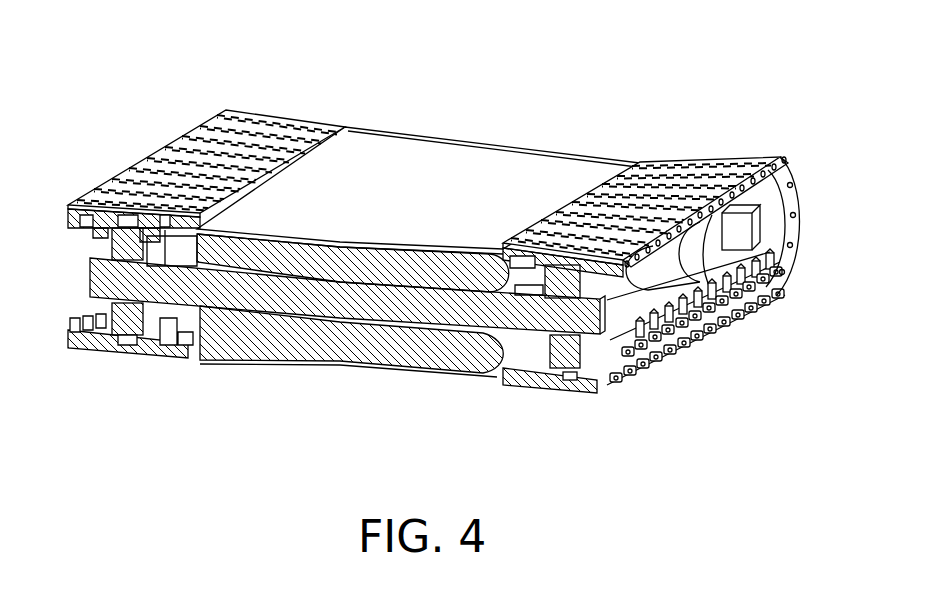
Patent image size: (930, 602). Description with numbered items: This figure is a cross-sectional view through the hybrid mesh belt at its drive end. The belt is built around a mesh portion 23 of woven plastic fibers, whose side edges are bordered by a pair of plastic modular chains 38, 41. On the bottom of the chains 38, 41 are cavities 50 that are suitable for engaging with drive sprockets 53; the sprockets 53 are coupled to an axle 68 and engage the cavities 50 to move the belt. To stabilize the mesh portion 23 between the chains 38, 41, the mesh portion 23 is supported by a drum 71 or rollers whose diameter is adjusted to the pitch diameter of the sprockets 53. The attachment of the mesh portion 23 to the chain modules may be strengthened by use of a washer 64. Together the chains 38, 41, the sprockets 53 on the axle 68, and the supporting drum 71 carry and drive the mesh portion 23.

The mesh portion 23 is at (455, 143).
The chain 38 is at (150, 158).
The chain 41 is at (720, 153).
The cavities 50 is at (570, 378).
The drive sprockets 53 is at (110, 343).
The washer 64 is at (237, 292).
The axle 68 is at (747, 230).
The drum 71 is at (322, 335).